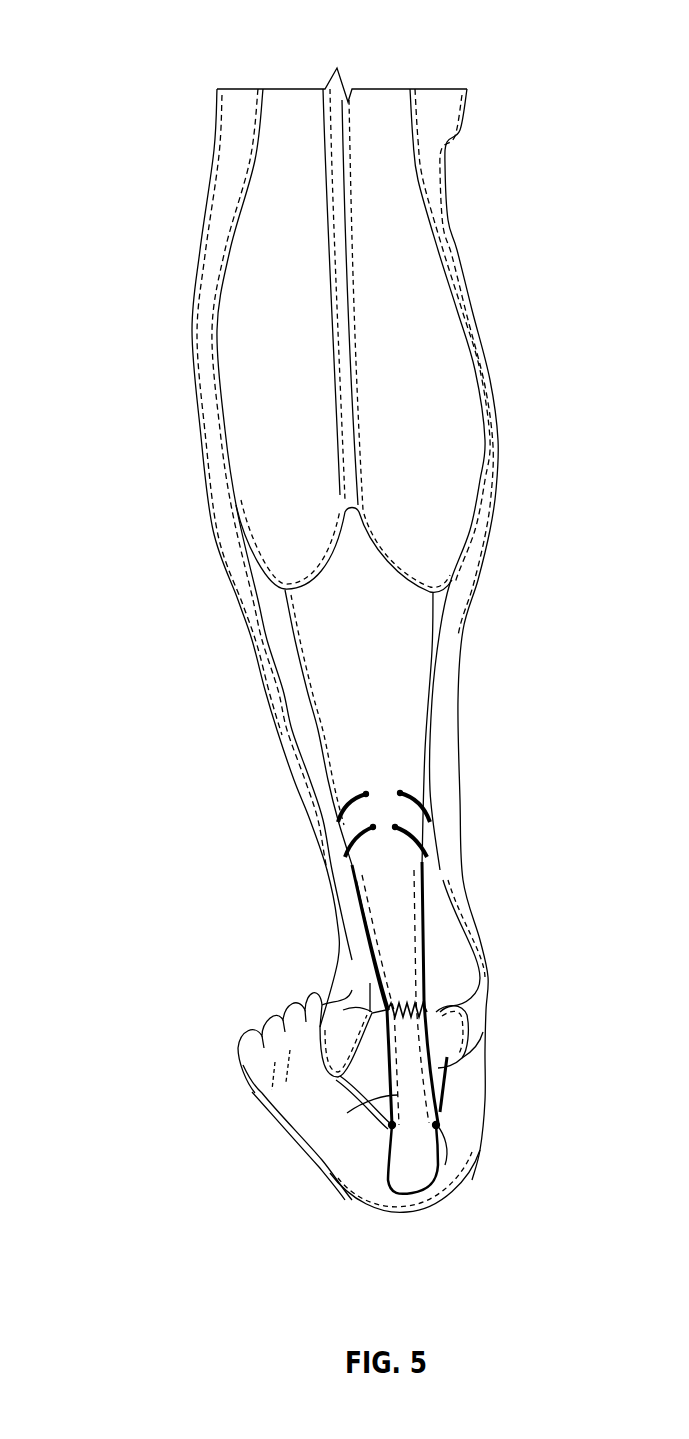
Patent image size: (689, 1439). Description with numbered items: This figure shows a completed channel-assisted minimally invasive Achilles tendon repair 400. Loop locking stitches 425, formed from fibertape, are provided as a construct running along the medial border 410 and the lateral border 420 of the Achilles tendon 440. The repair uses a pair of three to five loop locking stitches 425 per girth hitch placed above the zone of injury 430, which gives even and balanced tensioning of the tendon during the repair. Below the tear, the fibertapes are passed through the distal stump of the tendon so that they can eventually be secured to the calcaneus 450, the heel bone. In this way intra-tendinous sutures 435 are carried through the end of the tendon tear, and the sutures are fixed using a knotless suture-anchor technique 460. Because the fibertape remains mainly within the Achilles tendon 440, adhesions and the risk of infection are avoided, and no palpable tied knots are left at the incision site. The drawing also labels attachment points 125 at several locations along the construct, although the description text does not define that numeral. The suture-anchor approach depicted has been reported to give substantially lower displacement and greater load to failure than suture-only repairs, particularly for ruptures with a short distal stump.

The channel-assisted minimally invasive Achilles tendon repair 400 is at (123, 31).
The medial border 410 is at (415, 935).
The lateral border 420 is at (367, 917).
The loop locking stitches 425 is at (400, 793).
The attachment fasteners 125 is at (347, 853).
The zone of injury 430 is at (343, 1010).
The intra-tendinous sutures 435 is at (437, 1100).
The Achilles tendon 440 is at (416, 1075).
The calcaneus 450 is at (441, 1187).
The knotless suture-anchor technique 460 is at (437, 1127).